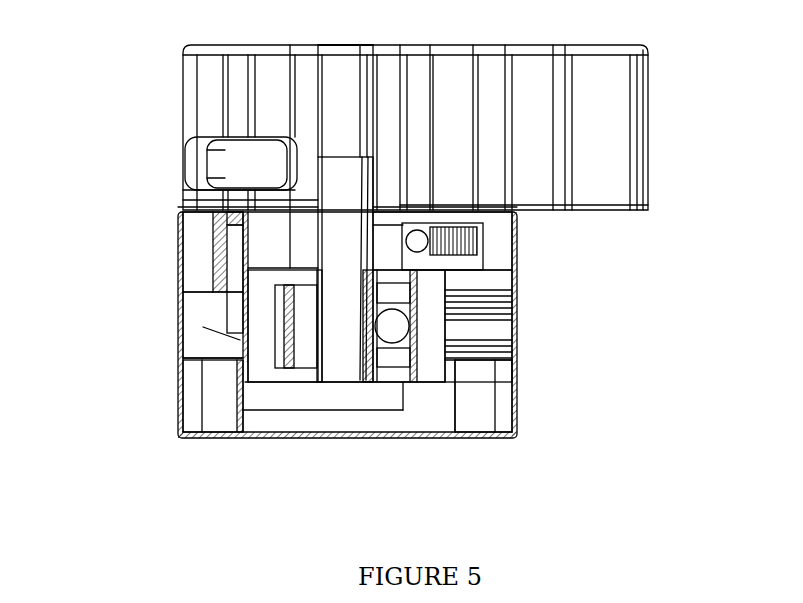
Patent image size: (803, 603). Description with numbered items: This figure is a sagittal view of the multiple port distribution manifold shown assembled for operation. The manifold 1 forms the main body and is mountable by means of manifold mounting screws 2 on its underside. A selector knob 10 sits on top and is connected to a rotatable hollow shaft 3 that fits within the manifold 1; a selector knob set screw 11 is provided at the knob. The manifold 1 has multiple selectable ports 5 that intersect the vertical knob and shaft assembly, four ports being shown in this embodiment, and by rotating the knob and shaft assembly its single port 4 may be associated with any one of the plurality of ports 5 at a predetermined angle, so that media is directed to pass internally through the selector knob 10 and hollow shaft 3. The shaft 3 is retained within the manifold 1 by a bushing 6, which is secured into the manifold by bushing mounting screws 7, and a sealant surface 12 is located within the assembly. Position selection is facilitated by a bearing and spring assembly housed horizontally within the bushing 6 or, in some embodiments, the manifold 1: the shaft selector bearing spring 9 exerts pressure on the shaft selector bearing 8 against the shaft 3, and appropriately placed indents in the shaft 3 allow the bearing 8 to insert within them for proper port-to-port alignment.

The manifold 1 is at (177, 371).
The manifold mounting screws 2 is at (221, 409).
The hollow shaft 3 is at (345, 150).
The port 1 (in/out) 4 is at (364, 44).
The ports 2-4 (in/out) 5 is at (193, 326).
The bushing 6 is at (196, 235).
The bushing mounting screws 7 is at (229, 277).
The shaft selector bearing 8 is at (424, 255).
The shaft selector bearing spring 9 is at (481, 241).
The selector knob 10 is at (182, 80).
The selector knob set screw 11 is at (182, 160).
The sealant surface 12 is at (288, 367).